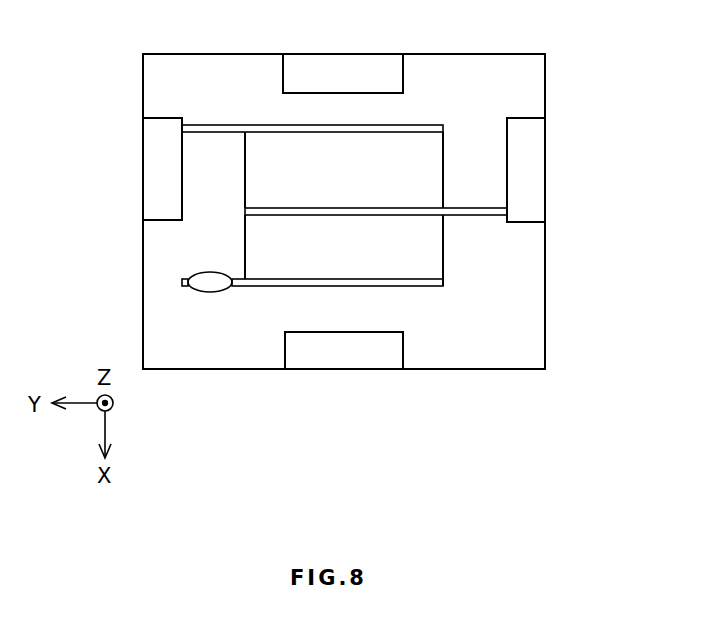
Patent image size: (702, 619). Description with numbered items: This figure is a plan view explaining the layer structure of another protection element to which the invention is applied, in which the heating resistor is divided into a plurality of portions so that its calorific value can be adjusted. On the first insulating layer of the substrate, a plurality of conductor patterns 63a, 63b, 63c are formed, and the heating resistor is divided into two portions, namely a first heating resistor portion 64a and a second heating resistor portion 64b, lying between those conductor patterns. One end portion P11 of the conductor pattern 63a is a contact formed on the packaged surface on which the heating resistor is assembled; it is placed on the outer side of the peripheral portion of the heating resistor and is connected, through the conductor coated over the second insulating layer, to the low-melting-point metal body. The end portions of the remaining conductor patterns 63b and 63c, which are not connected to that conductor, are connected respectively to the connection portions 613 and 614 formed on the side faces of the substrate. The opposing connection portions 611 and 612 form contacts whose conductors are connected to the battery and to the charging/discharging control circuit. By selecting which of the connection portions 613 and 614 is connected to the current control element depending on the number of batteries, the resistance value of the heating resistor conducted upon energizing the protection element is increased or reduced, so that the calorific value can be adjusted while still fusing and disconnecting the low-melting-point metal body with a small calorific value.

The connection portion 611 is at (362, 70).
The connection portion 612 is at (345, 355).
The connection portion 613 is at (157, 150).
The connection portion 614 is at (532, 152).
The conductor pattern 63a is at (432, 282).
The conductor pattern 63b is at (422, 128).
The conductor pattern 63c is at (465, 212).
The heating resistor portion 64a is at (272, 256).
The heating resistor portion 64b is at (275, 163).
The end portion P11 is at (210, 285).